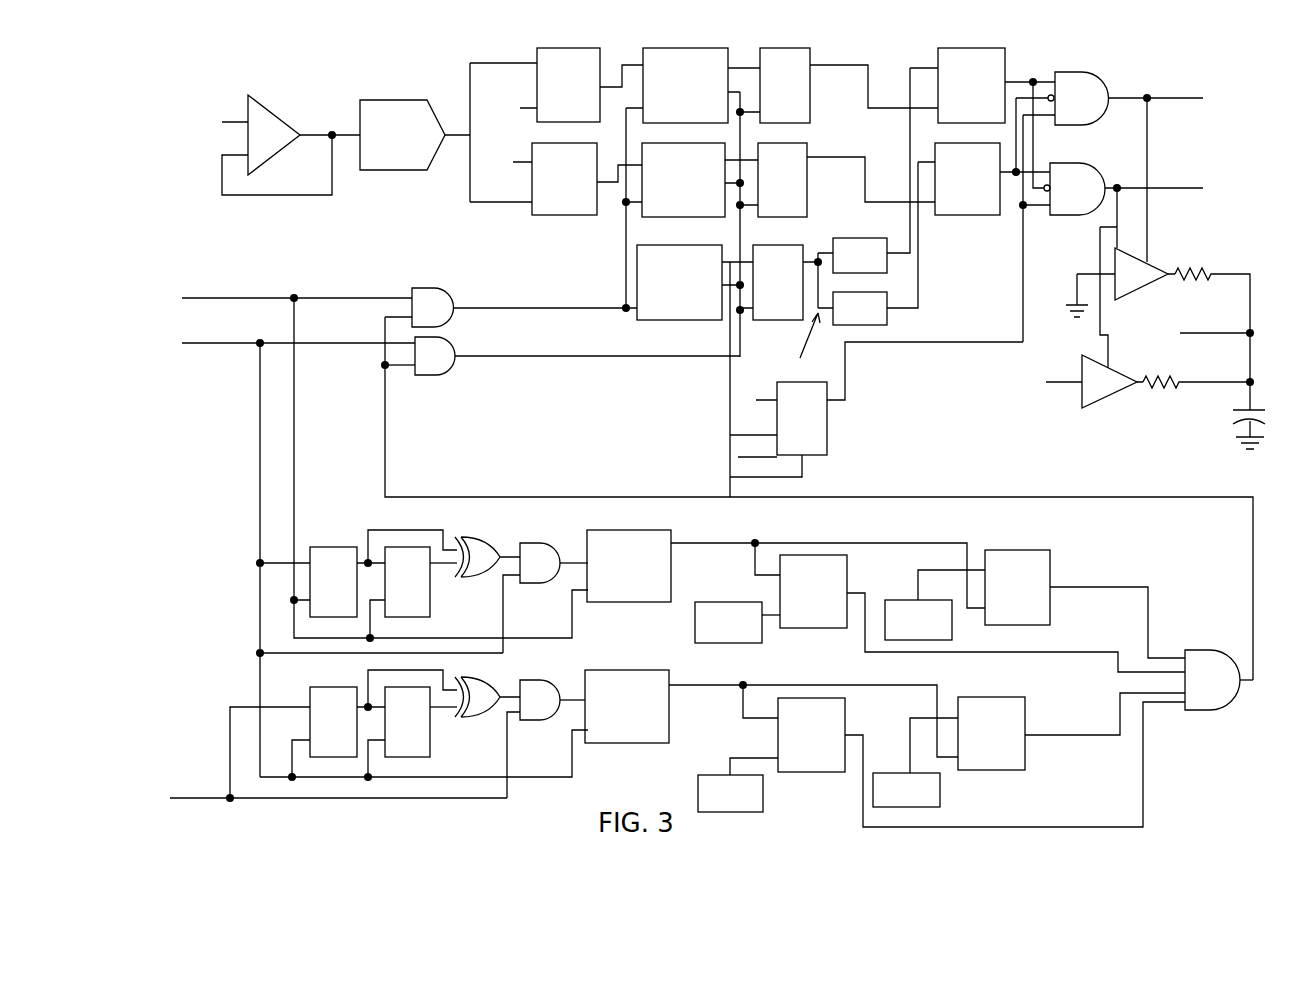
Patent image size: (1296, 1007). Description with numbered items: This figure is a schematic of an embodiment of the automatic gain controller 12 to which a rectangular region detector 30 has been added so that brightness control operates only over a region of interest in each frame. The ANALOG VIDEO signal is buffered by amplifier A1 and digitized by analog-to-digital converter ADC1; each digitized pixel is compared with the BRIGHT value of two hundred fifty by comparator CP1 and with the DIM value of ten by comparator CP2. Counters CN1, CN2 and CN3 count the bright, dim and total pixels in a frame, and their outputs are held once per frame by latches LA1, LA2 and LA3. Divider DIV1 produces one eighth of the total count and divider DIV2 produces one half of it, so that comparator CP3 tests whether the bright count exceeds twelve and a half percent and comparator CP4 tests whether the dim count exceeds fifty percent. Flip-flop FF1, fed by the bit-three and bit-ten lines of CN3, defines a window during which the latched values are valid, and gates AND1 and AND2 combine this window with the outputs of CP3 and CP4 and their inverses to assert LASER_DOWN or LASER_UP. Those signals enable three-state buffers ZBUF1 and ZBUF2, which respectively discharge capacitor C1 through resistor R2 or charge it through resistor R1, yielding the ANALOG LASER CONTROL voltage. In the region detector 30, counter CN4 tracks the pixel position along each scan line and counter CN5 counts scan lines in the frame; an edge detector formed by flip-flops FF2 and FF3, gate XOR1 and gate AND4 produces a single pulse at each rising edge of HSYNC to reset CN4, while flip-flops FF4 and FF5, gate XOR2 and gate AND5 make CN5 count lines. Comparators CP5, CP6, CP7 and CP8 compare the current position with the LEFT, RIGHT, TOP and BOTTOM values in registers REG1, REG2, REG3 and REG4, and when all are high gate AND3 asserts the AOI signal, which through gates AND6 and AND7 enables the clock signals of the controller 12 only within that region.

The automatic gain controller 12 is at (745, 20).
The rectangular region detector 30 is at (1202, 550).
The analog video input buffer amplifier A1 is at (276, 112).
The analog-to-digital converter ADC1 is at (405, 80).
The digital comparator CP1 is at (571, 47).
The digital comparator CP2 is at (557, 218).
The comparator CP3 is at (972, 49).
The comparator CP4 is at (961, 218).
The digital comparator CP5 is at (817, 626).
The digital comparator CP6 is at (1023, 550).
The digital comparator CP7 is at (822, 772).
The digital comparator CP8 is at (1055, 713).
The counter CN1 is at (672, 47).
The counter CN2 is at (643, 218).
The counter CN3 is at (637, 263).
The counter CN4 is at (622, 530).
The counter CN5 is at (638, 653).
The latch LA1 is at (790, 47).
The latch LA2 is at (808, 185).
The latch LA3 is at (798, 322).
The divider circuit DIV1 is at (863, 240).
The divider circuit DIV2 is at (887, 321).
The flip-flop FF1 is at (827, 415).
The flip-flop FF2 is at (340, 534).
The flip-flop FF3 is at (396, 546).
The flip-flop FF4 is at (340, 758).
The flip-flop FF5 is at (420, 758).
The AND gate AND1 is at (1078, 63).
The AND gate AND2 is at (1066, 217).
The AND gate AND3 is at (1218, 641).
The AND gate AND4 is at (558, 541).
The AND gate AND5 is at (552, 683).
The AND gate AND6 is at (430, 289).
The AND gate AND7 is at (432, 378).
The exclusive-OR gate XOR1 is at (488, 525).
The exclusive-OR gate XOR2 is at (477, 716).
The register REG1 is at (747, 588).
The register REG2 is at (900, 600).
The register REG3 is at (725, 813).
The register REG4 is at (940, 789).
The three-state buffer ZBUF1 is at (1143, 283).
The three-state buffer ZBUF2 is at (1110, 398).
The resistor R1 is at (1196, 373).
The resistor R2 is at (1212, 313).
The capacitor C1 is at (1230, 413).